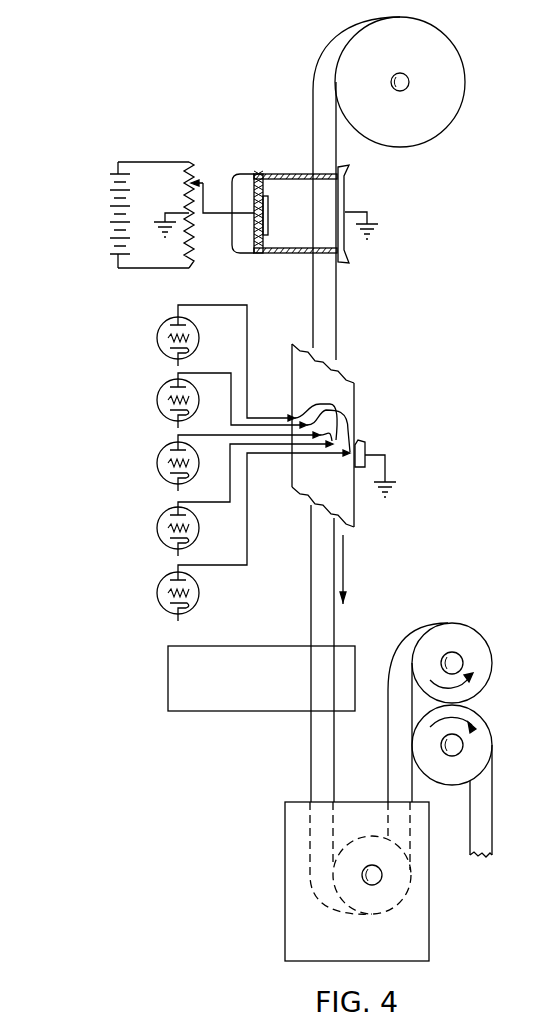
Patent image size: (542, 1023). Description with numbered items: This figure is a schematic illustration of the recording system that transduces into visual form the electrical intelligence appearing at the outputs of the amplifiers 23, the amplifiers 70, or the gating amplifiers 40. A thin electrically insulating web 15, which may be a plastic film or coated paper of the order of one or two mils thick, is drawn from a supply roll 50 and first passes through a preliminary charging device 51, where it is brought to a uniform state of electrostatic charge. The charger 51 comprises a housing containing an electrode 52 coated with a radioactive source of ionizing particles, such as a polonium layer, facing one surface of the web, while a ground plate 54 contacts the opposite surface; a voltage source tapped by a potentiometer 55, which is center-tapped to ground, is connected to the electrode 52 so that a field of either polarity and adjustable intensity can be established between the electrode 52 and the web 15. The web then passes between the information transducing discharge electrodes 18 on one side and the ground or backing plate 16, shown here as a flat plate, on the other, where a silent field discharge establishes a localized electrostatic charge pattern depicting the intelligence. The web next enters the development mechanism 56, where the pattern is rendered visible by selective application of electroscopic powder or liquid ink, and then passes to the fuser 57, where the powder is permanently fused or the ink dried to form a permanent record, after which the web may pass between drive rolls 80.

The web 15 is at (329, 305).
The ground plate 16 is at (363, 444).
The discharge electrodes 18 is at (266, 438).
The amplifiers 23 is at (108, 469).
The gating amplifiers 40 is at (108, 469).
The amplifiers 70 is at (167, 575).
The supply roll 50 is at (456, 64).
The preliminary charging device 51 is at (283, 174).
The electrode 52 is at (269, 203).
The ground plate 54 is at (346, 198).
The potentiometer 55 is at (187, 187).
The development mechanism 56 is at (243, 646).
The fuser 57 is at (285, 899).
The drive rolls 80 is at (471, 721).